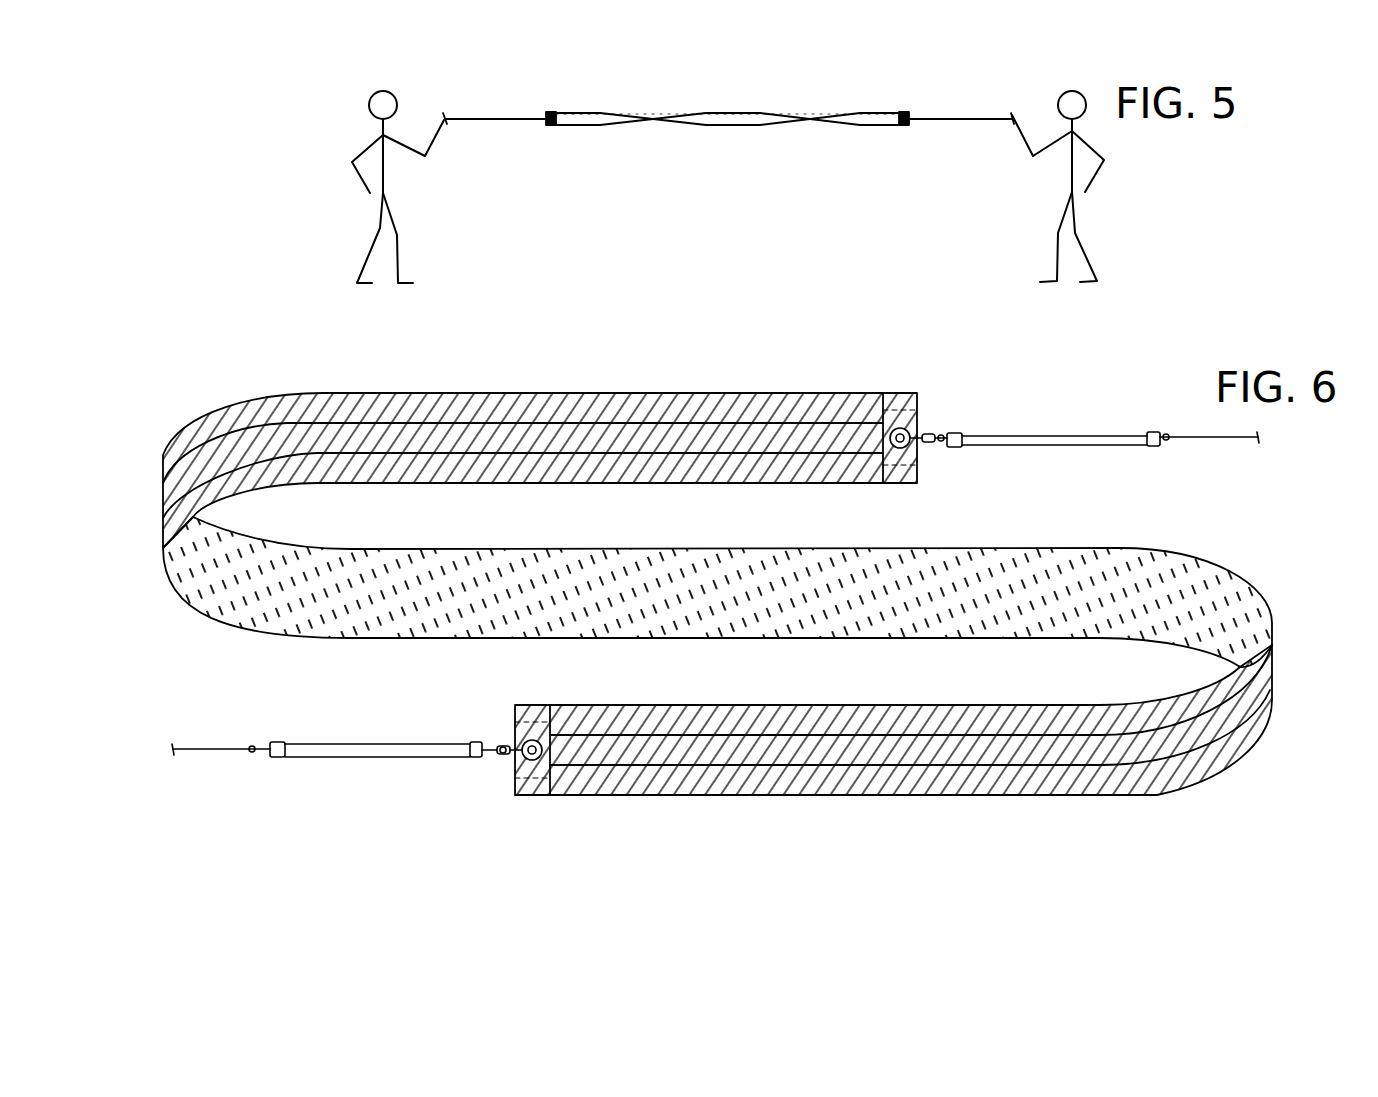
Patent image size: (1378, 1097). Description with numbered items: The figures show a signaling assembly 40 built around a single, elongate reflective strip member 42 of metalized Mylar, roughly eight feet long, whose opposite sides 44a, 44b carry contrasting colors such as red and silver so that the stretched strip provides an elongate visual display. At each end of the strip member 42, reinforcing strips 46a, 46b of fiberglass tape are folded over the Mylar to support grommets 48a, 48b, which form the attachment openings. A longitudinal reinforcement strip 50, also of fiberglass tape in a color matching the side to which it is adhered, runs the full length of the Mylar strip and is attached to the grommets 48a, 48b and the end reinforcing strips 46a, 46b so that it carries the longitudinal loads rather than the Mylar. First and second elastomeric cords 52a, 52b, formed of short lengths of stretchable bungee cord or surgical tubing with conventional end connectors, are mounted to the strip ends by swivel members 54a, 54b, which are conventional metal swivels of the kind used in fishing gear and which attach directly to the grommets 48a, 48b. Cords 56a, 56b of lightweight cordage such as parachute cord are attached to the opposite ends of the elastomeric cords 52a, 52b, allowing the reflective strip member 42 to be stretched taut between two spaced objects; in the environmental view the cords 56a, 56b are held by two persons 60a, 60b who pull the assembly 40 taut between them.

In FIG. 5, the signaling assembly 40 is at (728, 123).
In FIG. 6, the signaling assembly 40 is at (759, 582).
In FIG. 5, the elongate reflective strip member 42 is at (707, 126).
In FIG. 6, the elongate reflective strip member 42 is at (759, 573).
In FIG. 6, the first side of strip member 44a is at (738, 398).
In FIG. 6, the second side of strip member 44b is at (718, 639).
In FIG. 6, the first reinforcing strip 46a is at (900, 393).
In FIG. 6, the second reinforcing strip 46b is at (540, 797).
In FIG. 6, the first grommet 48a is at (906, 459).
In FIG. 6, the second grommet 48b is at (521, 765).
In FIG. 6, the longitudinal reinforcement strip 50 is at (1263, 697).
In FIG. 6, the first elastomeric cord 52a is at (1040, 433).
In FIG. 6, the second elastomeric cord 52b is at (370, 745).
In FIG. 6, the first swivel member 54a is at (930, 431).
In FIG. 6, the second swivel member 54b is at (500, 744).
In FIG. 5, the first cord 56a is at (967, 122).
In FIG. 6, the first cord 56a is at (1222, 438).
In FIG. 5, the second cord 56b is at (503, 117).
In FIG. 6, the second cord 56b is at (215, 752).
In FIG. 5, the first person 60a is at (1133, 197).
In FIG. 5, the second person 60b is at (352, 143).